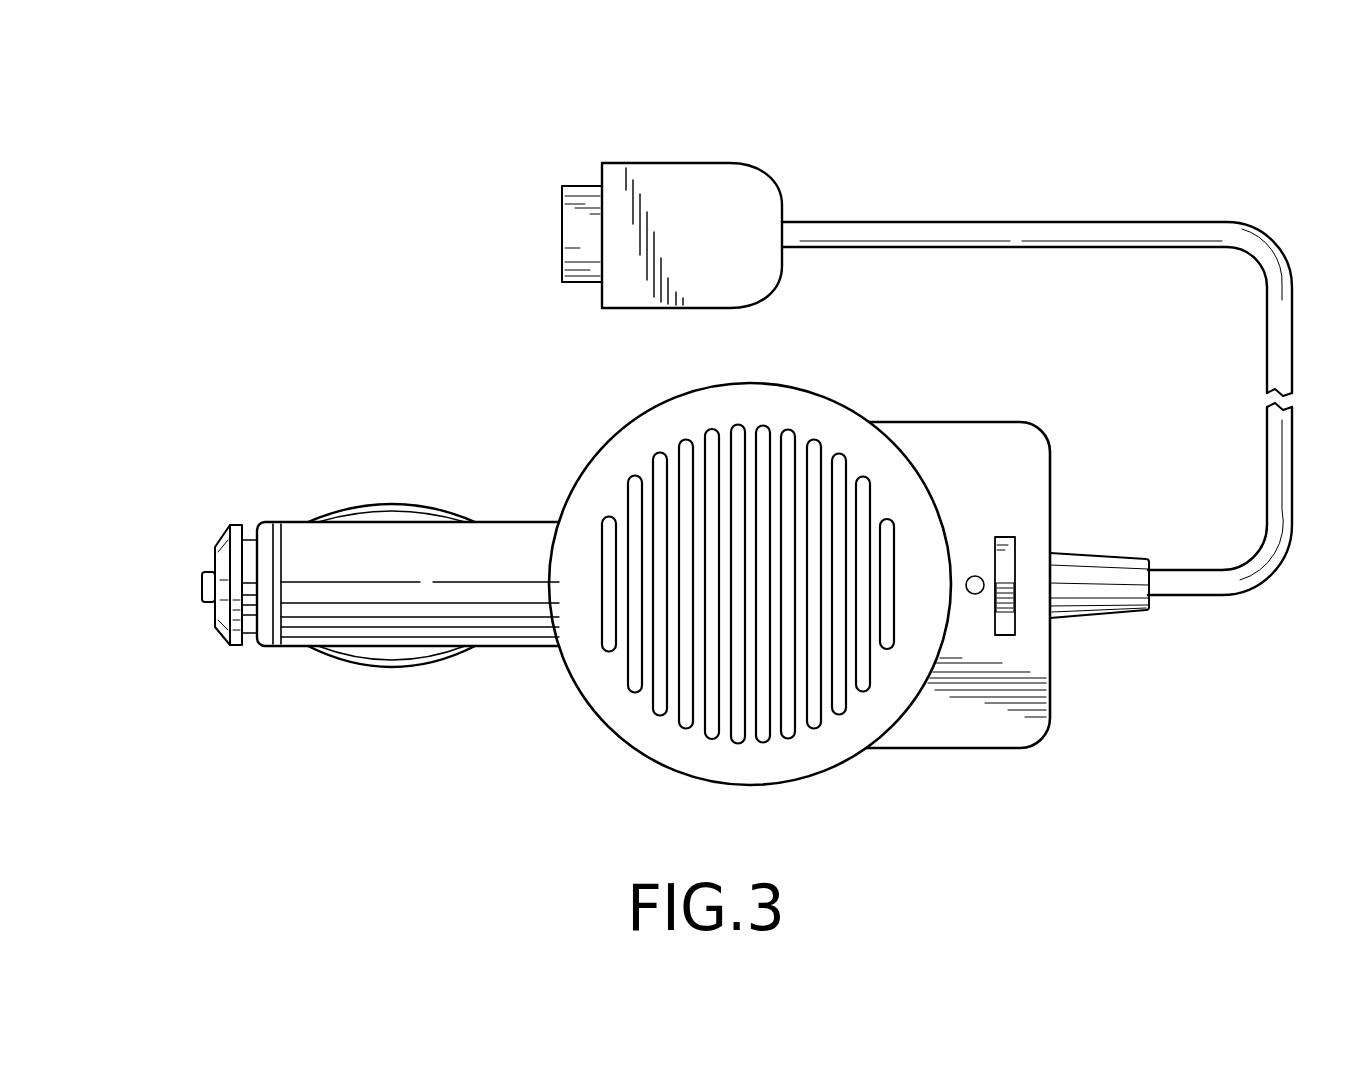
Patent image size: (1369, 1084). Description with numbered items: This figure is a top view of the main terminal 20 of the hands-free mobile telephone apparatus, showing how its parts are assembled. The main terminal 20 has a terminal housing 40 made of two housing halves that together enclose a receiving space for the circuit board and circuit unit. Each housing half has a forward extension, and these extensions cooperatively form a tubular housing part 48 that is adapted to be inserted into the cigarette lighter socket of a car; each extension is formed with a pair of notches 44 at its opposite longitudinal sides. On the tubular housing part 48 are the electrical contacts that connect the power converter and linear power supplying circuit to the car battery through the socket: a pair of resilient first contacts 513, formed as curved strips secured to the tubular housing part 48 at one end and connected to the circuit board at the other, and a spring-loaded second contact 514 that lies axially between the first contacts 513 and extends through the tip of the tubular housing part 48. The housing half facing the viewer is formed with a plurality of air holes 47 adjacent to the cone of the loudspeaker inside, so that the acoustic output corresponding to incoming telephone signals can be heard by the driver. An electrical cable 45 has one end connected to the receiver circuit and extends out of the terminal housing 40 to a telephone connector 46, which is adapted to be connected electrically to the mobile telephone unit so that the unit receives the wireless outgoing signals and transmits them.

The main terminal 20 is at (1159, 612).
The terminal housing 40 is at (1010, 432).
The notches 44 is at (342, 514).
The electrical cable 45 is at (1277, 300).
The telephone connector 46 is at (735, 178).
The air holes 47 is at (686, 440).
The tubular housing part 48 is at (503, 530).
The first contacts 513 is at (396, 506).
The second contact 514 is at (203, 572).